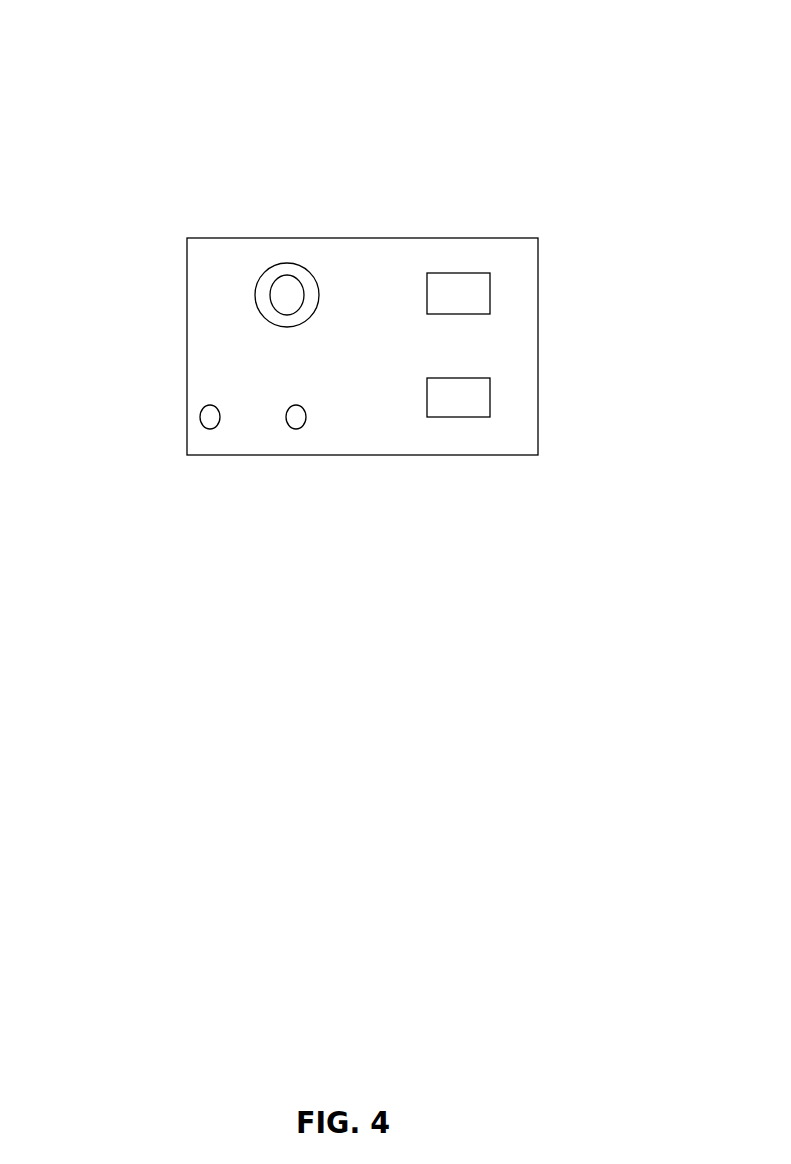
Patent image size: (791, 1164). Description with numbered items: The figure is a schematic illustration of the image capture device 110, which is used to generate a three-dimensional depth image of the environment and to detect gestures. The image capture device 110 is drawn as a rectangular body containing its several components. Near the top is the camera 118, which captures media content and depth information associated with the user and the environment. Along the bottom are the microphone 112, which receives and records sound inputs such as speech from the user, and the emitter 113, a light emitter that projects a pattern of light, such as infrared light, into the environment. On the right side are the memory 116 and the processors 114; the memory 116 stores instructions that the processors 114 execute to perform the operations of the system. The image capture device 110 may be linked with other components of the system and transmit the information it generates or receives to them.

The image capture device 110 is at (346, 574).
The microphone 112 is at (200, 418).
The emitter 113 is at (296, 429).
The processors 114 is at (490, 402).
The memory 116 is at (490, 293).
The camera 118 is at (287, 263).